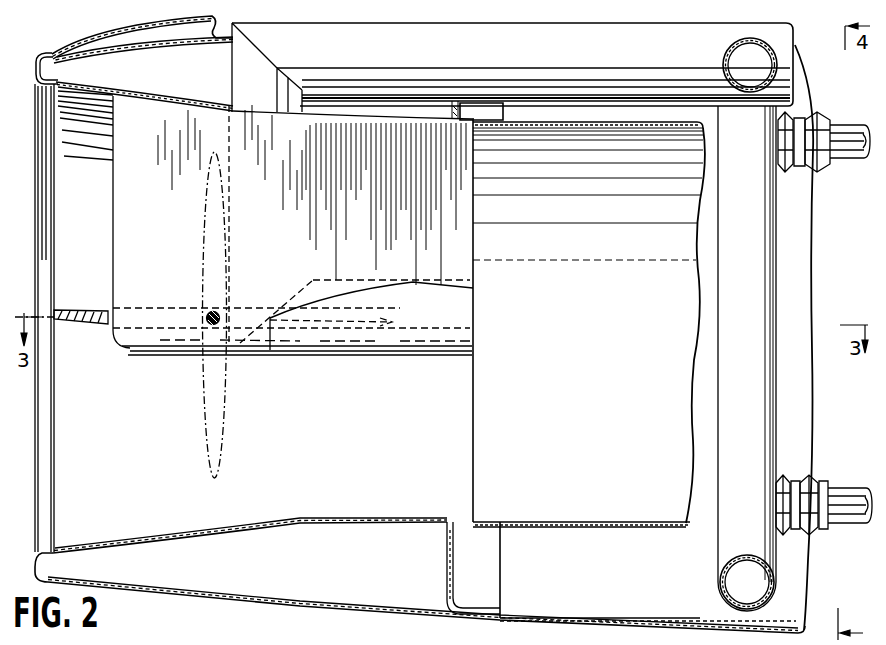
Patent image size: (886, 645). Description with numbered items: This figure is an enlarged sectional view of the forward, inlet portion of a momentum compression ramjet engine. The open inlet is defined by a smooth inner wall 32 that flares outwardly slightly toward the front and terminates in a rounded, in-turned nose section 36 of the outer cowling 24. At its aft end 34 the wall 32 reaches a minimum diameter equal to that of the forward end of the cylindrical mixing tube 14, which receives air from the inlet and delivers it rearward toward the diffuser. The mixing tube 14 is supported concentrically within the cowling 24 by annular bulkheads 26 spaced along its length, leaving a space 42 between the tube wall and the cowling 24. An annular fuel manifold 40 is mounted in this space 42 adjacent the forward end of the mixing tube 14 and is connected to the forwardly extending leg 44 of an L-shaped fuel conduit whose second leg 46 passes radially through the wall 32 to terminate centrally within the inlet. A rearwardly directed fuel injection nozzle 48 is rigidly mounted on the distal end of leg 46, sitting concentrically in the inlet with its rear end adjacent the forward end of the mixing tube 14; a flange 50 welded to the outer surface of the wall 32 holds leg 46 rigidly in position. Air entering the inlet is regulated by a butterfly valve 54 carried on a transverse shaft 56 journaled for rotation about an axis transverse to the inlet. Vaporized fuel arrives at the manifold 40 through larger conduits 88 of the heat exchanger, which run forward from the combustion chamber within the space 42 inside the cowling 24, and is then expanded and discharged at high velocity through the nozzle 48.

The cylindrical mixing tube 14 is at (542, 522).
The cowling 24 is at (222, 602).
The annular bulkhead 26 is at (446, 598).
The inner wall 32 is at (353, 522).
The aft end 34 is at (493, 452).
The nose section 36 is at (35, 82).
The annular fuel manifold 40 is at (767, 217).
The space 42 is at (557, 607).
The forwardly extending leg 44 is at (545, 60).
The second leg 46 is at (233, 65).
The fuel injection nozzle 48 is at (430, 338).
The flange 50 is at (229, 102).
The butterfly valve 54 is at (93, 328).
The transverse shaft 56 is at (208, 325).
The conduit 88 is at (845, 160).